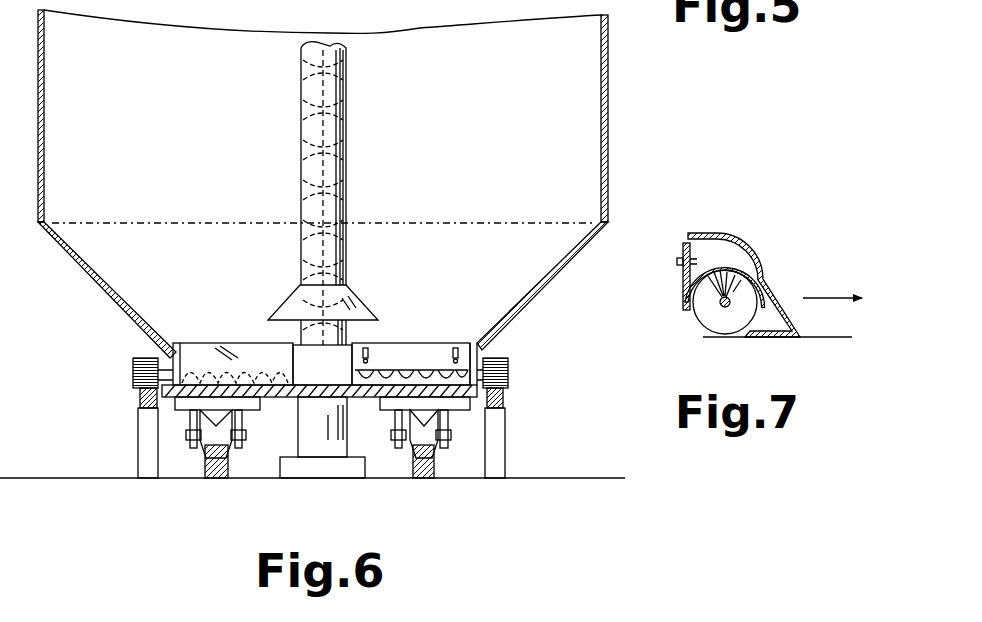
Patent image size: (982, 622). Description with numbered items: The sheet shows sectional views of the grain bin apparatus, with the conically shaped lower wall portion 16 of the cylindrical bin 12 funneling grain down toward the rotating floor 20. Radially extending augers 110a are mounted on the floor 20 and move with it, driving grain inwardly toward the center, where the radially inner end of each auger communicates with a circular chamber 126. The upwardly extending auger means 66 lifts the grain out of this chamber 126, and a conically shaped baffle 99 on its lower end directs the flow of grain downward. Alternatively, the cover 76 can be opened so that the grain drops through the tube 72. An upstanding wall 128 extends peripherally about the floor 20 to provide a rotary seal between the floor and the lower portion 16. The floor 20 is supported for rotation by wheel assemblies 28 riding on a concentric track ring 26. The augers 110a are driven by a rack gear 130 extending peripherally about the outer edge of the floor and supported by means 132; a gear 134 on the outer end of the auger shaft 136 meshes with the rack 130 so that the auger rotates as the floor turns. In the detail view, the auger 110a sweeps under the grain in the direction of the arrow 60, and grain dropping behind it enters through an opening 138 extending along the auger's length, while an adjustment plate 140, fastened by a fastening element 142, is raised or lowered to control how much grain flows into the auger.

In FIG. 6, the cylindrical bin 12 is at (610, 118).
In FIG. 6, the lower wall portion 16 is at (540, 282).
In FIG. 6, the auger means 66 is at (354, 154).
In FIG. 6, the conically shaped baffle 99 is at (352, 308).
In FIG. 6, the circular chamber 126 is at (336, 358).
In FIG. 6, the radially extending augers 110a is at (232, 343).
In FIG. 7, the radially extending augers 110a is at (752, 265).
In FIG. 6, the shaft 136 is at (440, 370).
In FIG. 7, the shaft 136 is at (725, 307).
In FIG. 6, the floor 20 is at (275, 385).
In FIG. 7, the floor 20 is at (834, 327).
In FIG. 6, the upstanding wall 128 is at (174, 358).
In FIG. 6, the gear 134 is at (500, 372).
In FIG. 6, the rack gear 130 is at (505, 393).
In FIG. 6, the support means 132 is at (500, 432).
In FIG. 6, the cover 76 is at (323, 400).
In FIG. 6, the chute or tube 72 is at (346, 420).
In FIG. 6, the wheel assemblies 28 is at (184, 457).
In FIG. 6, the track ring 26 is at (424, 478).
In FIG. 7, the fastening element 142 is at (677, 259).
In FIG. 7, the adjustment plate 140 is at (683, 297).
In FIG. 7, the opening 138 is at (682, 322).
In FIG. 7, the arrow 60 is at (822, 298).